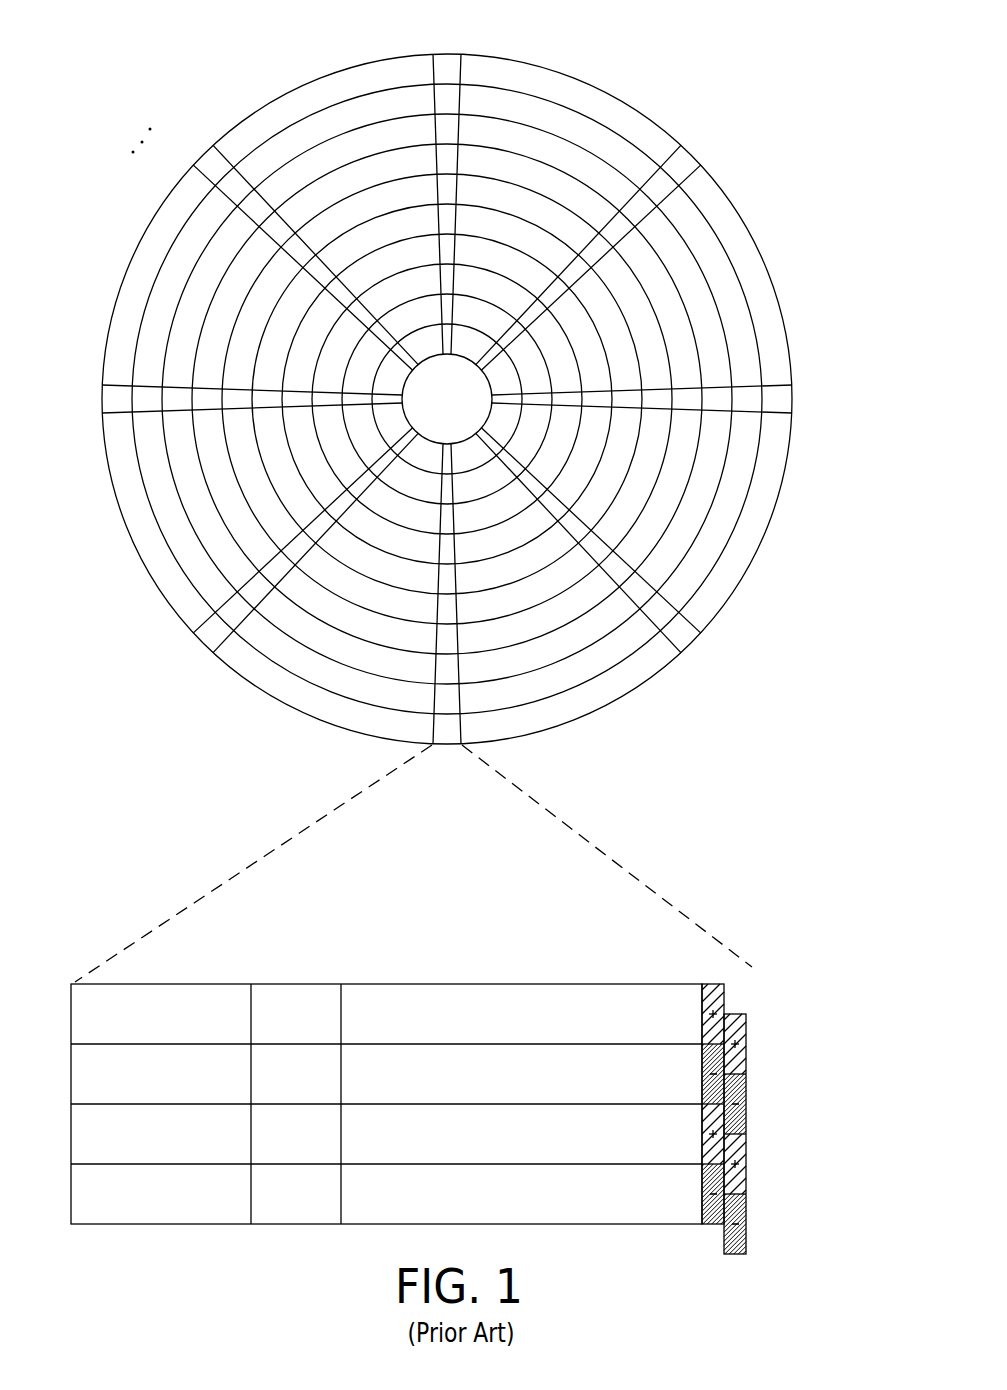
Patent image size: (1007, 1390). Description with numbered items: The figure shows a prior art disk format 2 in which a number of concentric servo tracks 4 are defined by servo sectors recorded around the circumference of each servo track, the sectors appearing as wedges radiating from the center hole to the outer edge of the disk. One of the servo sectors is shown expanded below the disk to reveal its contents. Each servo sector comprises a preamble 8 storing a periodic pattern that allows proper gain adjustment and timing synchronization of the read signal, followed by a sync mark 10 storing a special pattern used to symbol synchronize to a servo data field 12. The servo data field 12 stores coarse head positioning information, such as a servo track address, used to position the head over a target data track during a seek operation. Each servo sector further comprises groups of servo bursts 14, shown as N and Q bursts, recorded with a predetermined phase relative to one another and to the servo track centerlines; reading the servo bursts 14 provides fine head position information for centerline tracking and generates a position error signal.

The disk format 2 is at (447, 372).
The servo tracks 4 is at (562, 125).
The preamble 8 is at (169, 984).
The sync mark 10 is at (300, 984).
The servo data field 12 is at (508, 984).
The servo bursts 14 is at (750, 974).